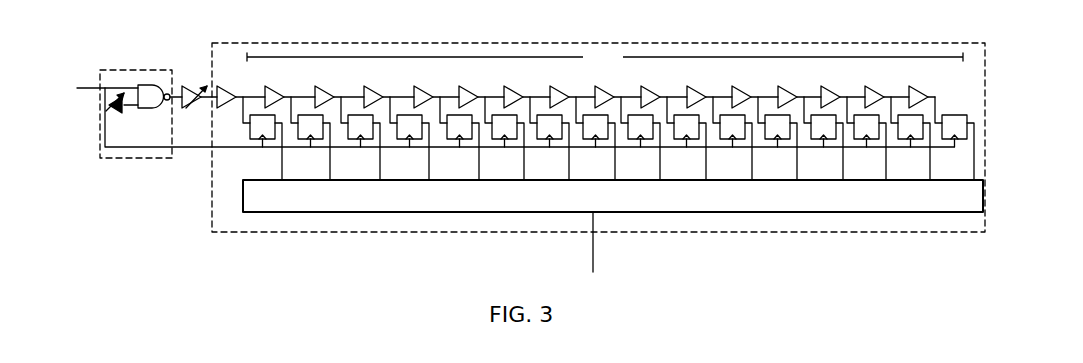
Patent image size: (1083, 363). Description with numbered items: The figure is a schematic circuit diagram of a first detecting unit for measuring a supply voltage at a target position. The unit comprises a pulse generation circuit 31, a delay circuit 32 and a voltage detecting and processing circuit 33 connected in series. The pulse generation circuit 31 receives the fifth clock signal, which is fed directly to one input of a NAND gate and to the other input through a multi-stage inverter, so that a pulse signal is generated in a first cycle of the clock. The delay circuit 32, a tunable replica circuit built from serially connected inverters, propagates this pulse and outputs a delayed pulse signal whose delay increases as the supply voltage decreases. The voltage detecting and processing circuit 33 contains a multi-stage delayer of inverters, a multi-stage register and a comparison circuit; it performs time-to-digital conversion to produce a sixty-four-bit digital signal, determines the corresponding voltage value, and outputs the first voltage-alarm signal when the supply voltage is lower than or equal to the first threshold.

The pulse generation circuit 31 is at (120, 69).
The delay circuit 32 is at (190, 82).
The voltage detecting and processing circuit 33 is at (858, 43).